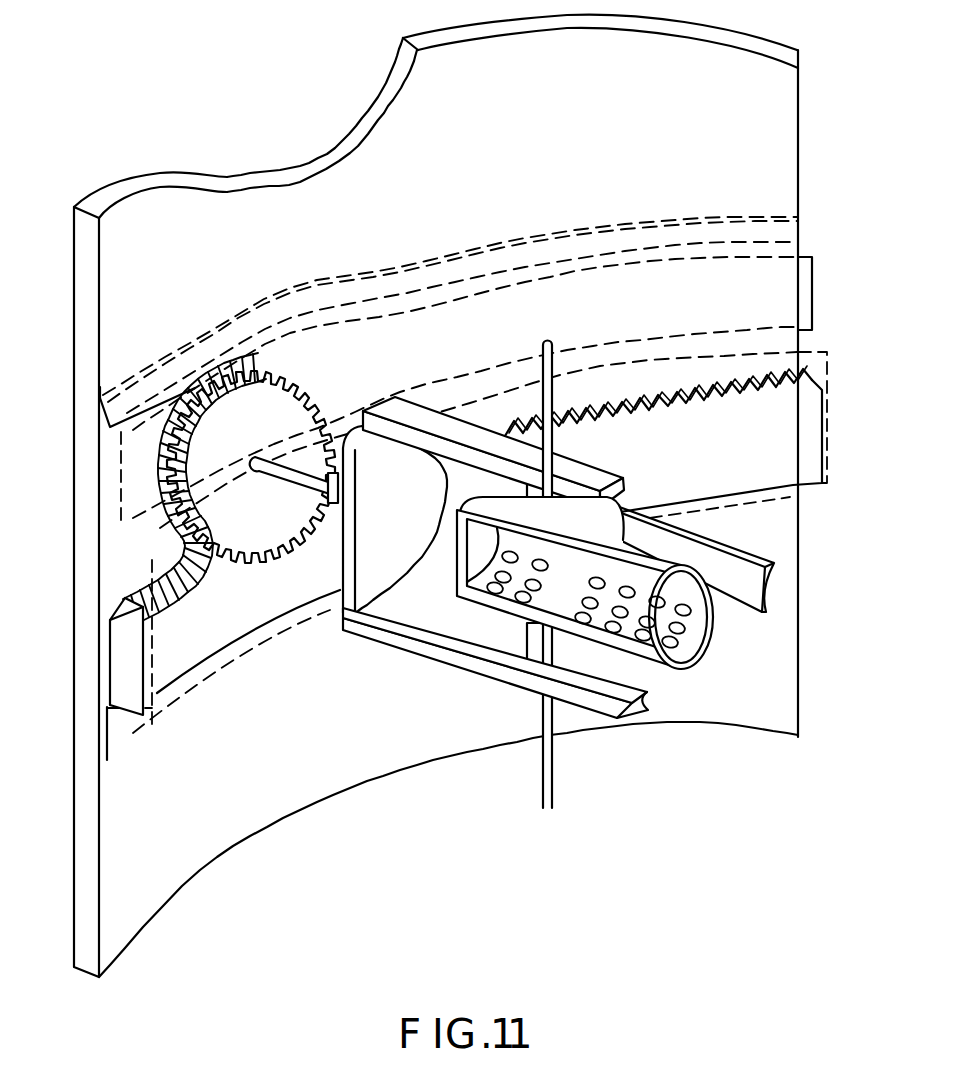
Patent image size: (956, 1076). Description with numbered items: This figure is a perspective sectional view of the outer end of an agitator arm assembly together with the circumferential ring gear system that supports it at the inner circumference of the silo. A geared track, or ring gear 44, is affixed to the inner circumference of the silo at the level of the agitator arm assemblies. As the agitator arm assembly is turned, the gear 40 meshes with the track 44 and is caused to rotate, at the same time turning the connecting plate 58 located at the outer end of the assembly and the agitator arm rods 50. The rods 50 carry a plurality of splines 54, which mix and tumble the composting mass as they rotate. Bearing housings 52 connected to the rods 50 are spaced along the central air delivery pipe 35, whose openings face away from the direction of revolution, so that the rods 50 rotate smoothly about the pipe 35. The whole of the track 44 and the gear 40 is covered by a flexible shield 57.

The central air delivery pipe 35 is at (693, 623).
The gear 40 is at (269, 529).
The ring gear 44 is at (128, 665).
The agitator arm rods 50 is at (430, 627).
The bearing housings 52 is at (558, 648).
The splines 54 is at (540, 783).
The flexible shield 57 is at (705, 272).
The connecting plate 58 is at (409, 529).